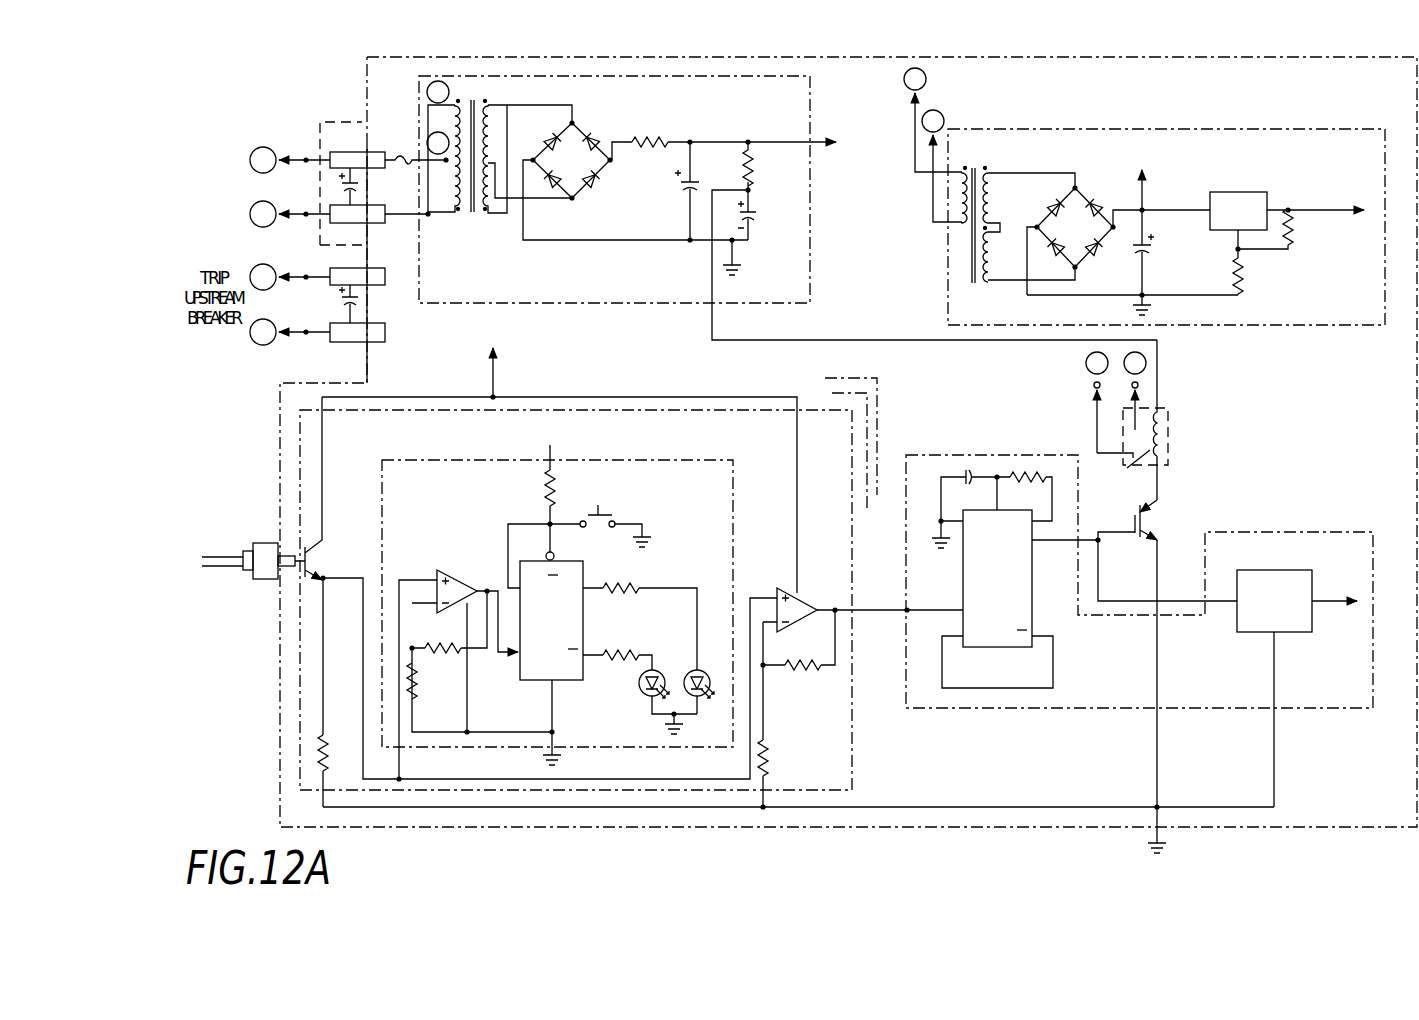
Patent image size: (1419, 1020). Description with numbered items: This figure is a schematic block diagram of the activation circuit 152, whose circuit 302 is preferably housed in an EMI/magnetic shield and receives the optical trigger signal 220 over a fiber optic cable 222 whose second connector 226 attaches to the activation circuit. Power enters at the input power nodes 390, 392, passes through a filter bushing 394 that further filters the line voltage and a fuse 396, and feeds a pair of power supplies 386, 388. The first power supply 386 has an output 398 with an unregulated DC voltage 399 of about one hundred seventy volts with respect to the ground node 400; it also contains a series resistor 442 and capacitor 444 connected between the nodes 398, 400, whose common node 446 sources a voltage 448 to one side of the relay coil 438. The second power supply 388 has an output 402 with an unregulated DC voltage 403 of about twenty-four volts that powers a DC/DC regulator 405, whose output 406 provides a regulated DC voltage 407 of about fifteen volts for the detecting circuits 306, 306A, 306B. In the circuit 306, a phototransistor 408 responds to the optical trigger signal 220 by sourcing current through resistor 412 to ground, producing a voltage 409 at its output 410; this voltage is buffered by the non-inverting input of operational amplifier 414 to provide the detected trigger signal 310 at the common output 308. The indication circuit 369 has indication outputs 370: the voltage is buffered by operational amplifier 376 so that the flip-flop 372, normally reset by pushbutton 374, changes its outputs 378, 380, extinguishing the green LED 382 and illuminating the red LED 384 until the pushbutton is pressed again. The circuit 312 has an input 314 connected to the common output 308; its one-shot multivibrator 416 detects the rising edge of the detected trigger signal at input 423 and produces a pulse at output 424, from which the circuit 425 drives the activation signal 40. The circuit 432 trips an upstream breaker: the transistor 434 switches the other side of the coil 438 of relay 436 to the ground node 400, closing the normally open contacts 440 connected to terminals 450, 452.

The circuit 302 is at (535, 828).
The activation circuit 152 is at (1003, 861).
The filter bushing 394 is at (344, 120).
The input power node 390 is at (305, 155).
The input power node 392 is at (305, 209).
The terminal 450 is at (305, 272).
The terminal 452 is at (306, 337).
The first power supply 386 is at (811, 199).
The fuse 396 is at (406, 150).
The output 398 is at (747, 136).
The unregulated DC voltage 399 is at (813, 135).
The ground node 400 is at (690, 244).
The resistor 442 is at (752, 163).
The common node 446 is at (744, 188).
The capacitor 444 is at (752, 220).
The voltage 448 is at (850, 336).
The second power supply 388 is at (1050, 128).
The output 402 is at (1140, 208).
The unregulated DC voltage 403 is at (1172, 208).
The DC/DC regulator 405 is at (1236, 192).
The output 406 is at (1291, 224).
The regulated DC voltage 407 is at (1338, 207).
The circuit 306 is at (852, 430).
The circuit 306A is at (867, 400).
The circuit 306B is at (878, 381).
The fiber optic cable 222 is at (210, 556).
The second connector 226 is at (263, 581).
The optical trigger signal 220 is at (213, 590).
The phototransistor 408 is at (312, 547).
The output 410 is at (325, 582).
The resistor 412 is at (318, 758).
The indication circuit 369 is at (447, 458).
The operational amplifier 376 is at (446, 568).
The flip-flop 372 is at (530, 681).
The pushbutton 374 is at (615, 508).
The flip-flop output 378 is at (587, 592).
The flip-flop output 380 is at (586, 657).
The red LED 384 is at (690, 668).
The green LED 382 is at (646, 697).
The indication output 370 is at (681, 603).
The operational amplifier 414 is at (788, 590).
The voltage 409 is at (767, 703).
The common output 308 is at (835, 606).
The detected trigger signal 310 is at (883, 608).
The input 314 is at (906, 613).
The one-shot multivibrator 416 is at (1006, 662).
The input 423 is at (960, 608).
The output 424 is at (1036, 546).
The transistor 434 is at (1160, 510).
The relay 436 is at (1165, 408).
The circuit 432 is at (1084, 406).
The contacts 440 is at (1132, 448).
The coil 438 is at (1150, 452).
The circuit 312 is at (1342, 530).
The circuit 425 is at (1274, 569).
The activation signal 40 is at (1330, 604).